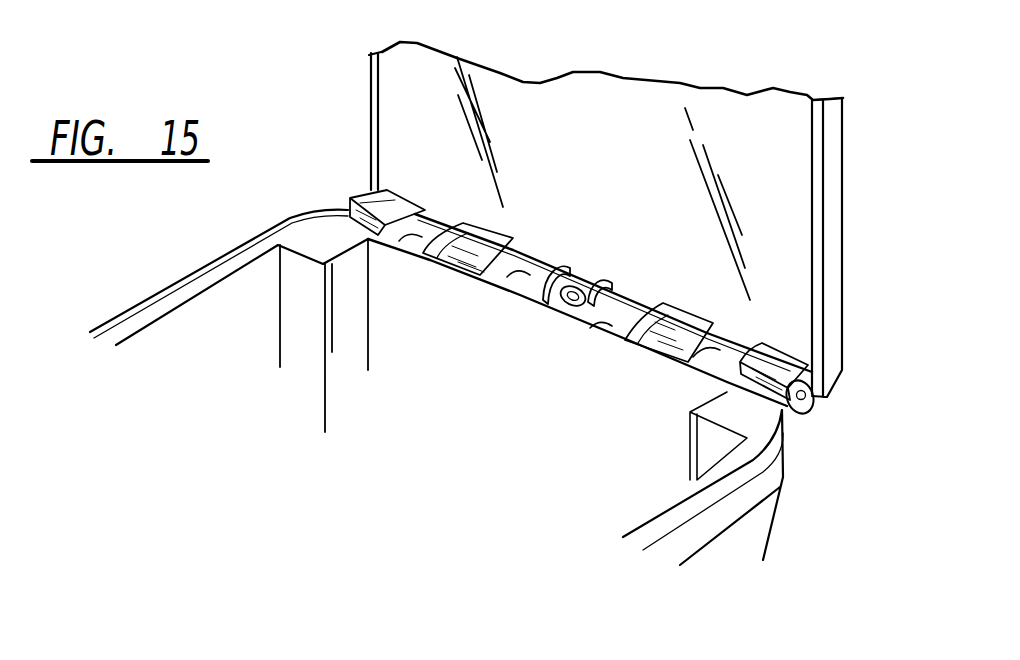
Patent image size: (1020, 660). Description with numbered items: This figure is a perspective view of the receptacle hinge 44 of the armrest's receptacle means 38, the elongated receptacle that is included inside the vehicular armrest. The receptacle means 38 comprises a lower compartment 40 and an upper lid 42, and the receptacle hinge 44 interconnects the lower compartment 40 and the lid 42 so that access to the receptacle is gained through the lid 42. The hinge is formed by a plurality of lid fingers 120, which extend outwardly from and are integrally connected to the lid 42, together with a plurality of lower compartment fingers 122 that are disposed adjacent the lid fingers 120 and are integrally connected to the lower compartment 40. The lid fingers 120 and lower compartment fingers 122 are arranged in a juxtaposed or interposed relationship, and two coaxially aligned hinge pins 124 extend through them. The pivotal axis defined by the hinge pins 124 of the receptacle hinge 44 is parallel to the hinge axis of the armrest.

The receptacle means 38 is at (572, 72).
The upper lid 42 is at (372, 104).
The lower compartment 40 is at (137, 307).
The receptacle hinge 44 is at (368, 186).
The lid fingers 120 is at (482, 240).
The lower compartment fingers 122 is at (507, 274).
The hinge pins 124 is at (580, 277).